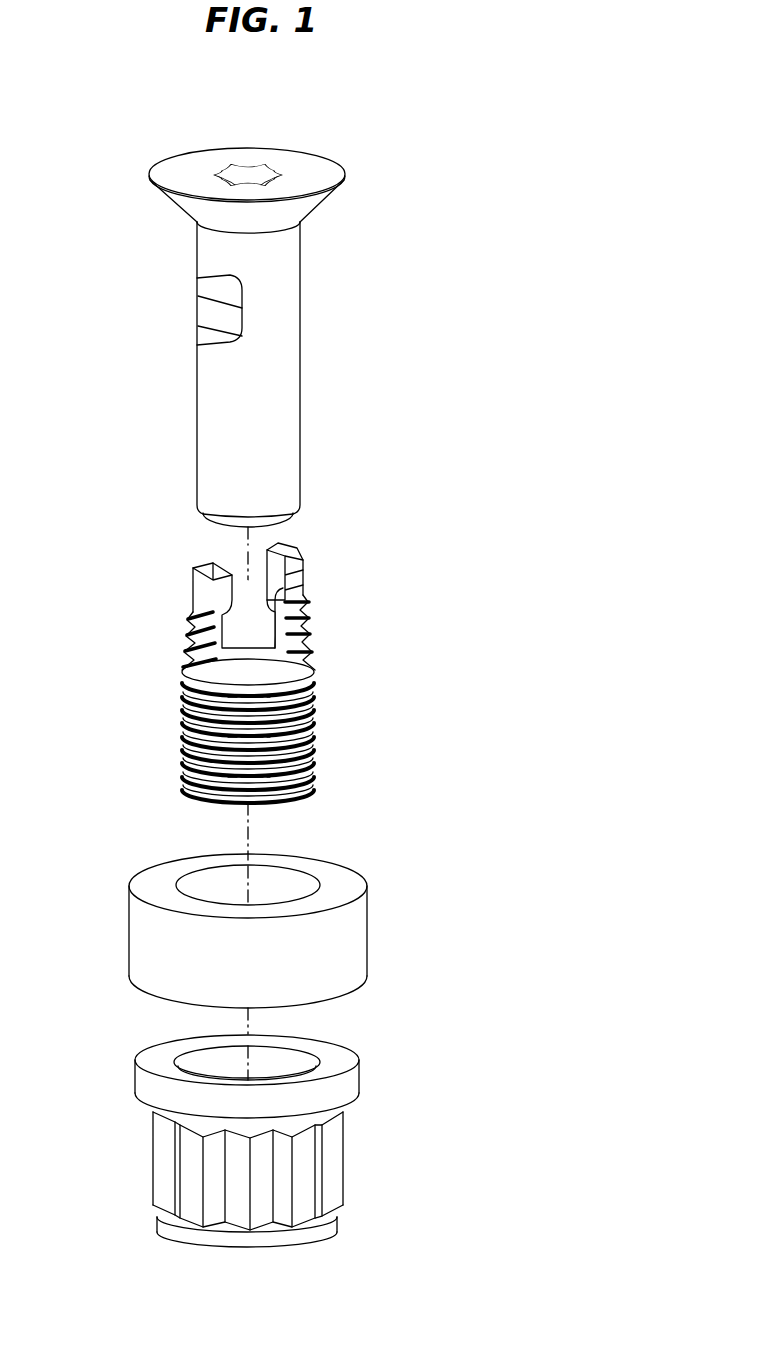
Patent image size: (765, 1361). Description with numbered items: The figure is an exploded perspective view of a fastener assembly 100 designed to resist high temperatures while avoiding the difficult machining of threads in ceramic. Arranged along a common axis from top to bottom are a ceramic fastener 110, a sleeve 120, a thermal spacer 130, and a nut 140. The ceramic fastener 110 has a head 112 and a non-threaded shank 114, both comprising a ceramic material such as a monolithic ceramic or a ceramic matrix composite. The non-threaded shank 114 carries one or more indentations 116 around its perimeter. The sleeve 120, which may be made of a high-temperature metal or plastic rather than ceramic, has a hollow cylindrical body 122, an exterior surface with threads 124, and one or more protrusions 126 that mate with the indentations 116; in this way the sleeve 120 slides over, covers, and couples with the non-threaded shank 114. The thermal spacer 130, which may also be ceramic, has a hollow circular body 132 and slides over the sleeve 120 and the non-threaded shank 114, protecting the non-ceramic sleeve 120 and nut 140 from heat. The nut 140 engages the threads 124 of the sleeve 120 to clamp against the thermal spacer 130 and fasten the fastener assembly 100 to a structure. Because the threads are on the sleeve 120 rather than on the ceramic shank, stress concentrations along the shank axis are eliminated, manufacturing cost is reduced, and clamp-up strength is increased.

The fastener assembly 100 is at (558, 186).
The ceramic fastener 110 is at (93, 245).
The head 112 is at (310, 170).
The non-threaded shank 114 is at (301, 318).
The indentations 116 is at (212, 303).
The sleeve 120 is at (87, 669).
The hollow cylindrical body 122 is at (352, 710).
The threads 124 is at (313, 767).
The protrusions 126 is at (202, 582).
The thermal spacer 130 is at (78, 906).
The hollow circular body 132 is at (381, 947).
The nut 140 is at (73, 1141).